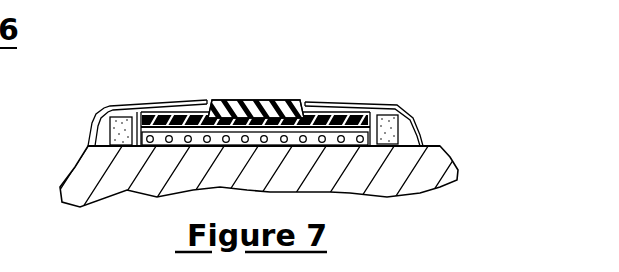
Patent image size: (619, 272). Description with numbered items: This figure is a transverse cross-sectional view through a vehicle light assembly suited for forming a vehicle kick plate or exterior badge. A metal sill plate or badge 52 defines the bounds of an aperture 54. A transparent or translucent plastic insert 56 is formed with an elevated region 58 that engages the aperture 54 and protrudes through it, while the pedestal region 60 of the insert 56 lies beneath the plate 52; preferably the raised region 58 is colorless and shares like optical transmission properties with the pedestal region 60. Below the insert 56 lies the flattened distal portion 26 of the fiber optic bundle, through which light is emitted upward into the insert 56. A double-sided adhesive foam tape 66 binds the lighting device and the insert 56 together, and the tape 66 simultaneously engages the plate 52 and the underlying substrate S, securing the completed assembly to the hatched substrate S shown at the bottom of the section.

The metal sill plate or badge 52 is at (117, 107).
The aperture 54 is at (213, 98).
The elevated region 58 is at (250, 100).
The plastic insert 56 is at (298, 95).
The pedestal region 60 is at (335, 113).
The flattened distal portion 26 is at (397, 117).
The double-sided adhesive foam tape 66 is at (113, 125).
The substrate S is at (273, 175).